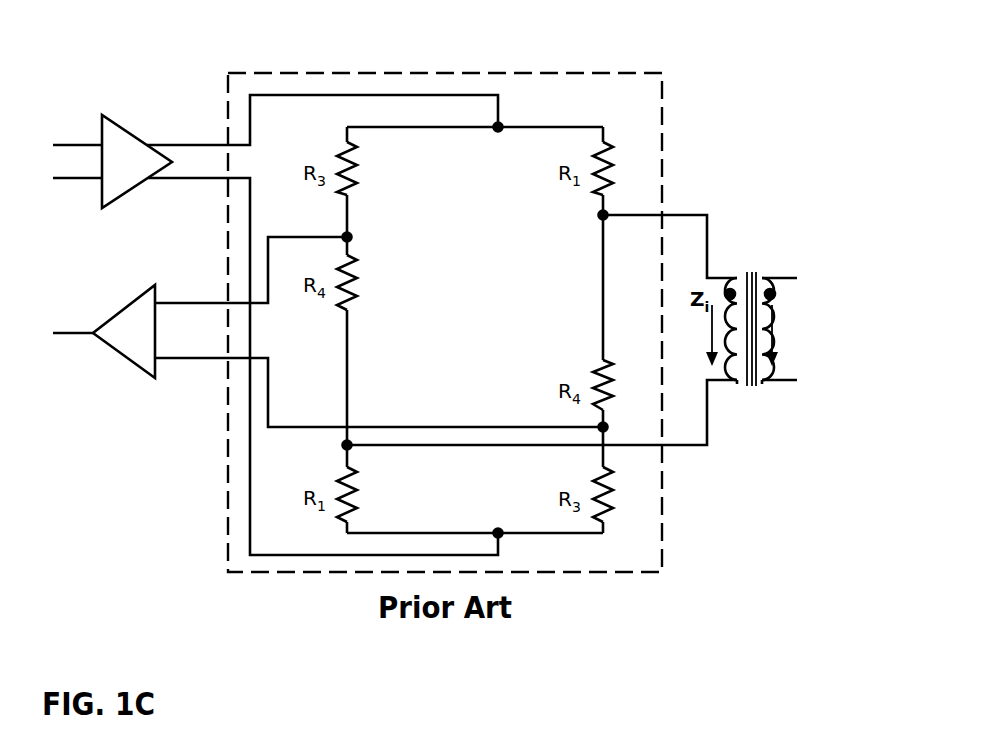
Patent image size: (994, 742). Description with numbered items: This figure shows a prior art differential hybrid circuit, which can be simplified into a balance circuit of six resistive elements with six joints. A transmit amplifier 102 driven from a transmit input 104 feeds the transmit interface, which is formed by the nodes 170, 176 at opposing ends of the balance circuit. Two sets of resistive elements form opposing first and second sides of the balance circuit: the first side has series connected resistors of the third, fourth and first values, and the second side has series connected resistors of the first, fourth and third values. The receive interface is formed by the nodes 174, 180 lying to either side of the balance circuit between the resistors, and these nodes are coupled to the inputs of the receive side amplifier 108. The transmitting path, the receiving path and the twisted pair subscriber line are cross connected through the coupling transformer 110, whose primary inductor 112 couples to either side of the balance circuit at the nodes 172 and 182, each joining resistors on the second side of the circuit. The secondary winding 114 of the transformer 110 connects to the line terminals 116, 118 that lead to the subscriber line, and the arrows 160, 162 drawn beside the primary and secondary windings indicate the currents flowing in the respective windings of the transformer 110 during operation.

The transmitter amplifier 102 is at (130, 132).
The transmit input 104 is at (97, 173).
The receive side amplifier 108 is at (143, 290).
The transformer 110 is at (751, 264).
The primary inductor 112 is at (725, 384).
The secondary winding lead 114 is at (765, 384).
The secondary terminal 116 is at (780, 384).
The secondary terminal 118 is at (781, 281).
The primary current 160 is at (706, 348).
The secondary current 162 is at (776, 347).
The node 170 is at (500, 126).
The node 172 is at (603, 218).
The node 174 is at (350, 235).
The node 176 is at (499, 531).
The node 180 is at (601, 425).
The node 182 is at (349, 447).